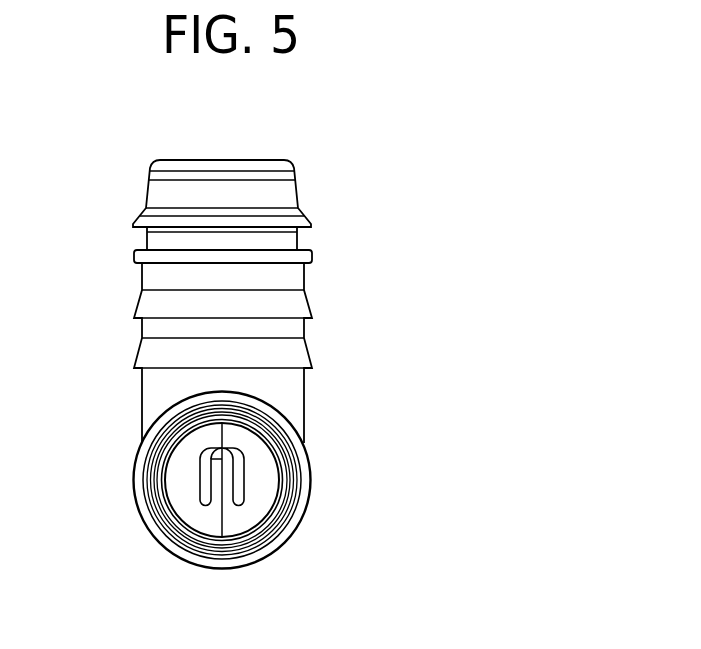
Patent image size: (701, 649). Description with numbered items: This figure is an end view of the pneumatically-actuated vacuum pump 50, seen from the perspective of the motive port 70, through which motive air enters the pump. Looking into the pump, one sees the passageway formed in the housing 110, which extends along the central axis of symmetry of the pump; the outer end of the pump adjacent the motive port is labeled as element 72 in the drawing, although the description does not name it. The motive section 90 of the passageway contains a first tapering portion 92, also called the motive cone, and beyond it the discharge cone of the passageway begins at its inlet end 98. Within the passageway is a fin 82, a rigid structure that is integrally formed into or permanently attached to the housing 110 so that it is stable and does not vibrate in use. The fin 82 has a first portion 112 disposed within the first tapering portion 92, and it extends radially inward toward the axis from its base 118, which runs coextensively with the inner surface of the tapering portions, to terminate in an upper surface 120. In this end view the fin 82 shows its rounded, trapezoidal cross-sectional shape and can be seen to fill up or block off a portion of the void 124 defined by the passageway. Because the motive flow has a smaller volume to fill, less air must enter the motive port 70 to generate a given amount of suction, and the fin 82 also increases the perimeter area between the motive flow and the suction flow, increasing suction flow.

The pneumatically-actuated vacuum pump 50 is at (393, 141).
The cap 72 is at (250, 160).
The housing 110 is at (290, 385).
The upper surface 120 is at (238, 448).
The first tapering portion 92 is at (268, 467).
The fin 82 is at (229, 488).
The motive port 70 is at (263, 498).
The base 118 is at (229, 506).
The void 124 is at (200, 463).
The first portion 112 is at (200, 481).
The motive section 90 is at (158, 505).
The inlet end 98 is at (178, 535).